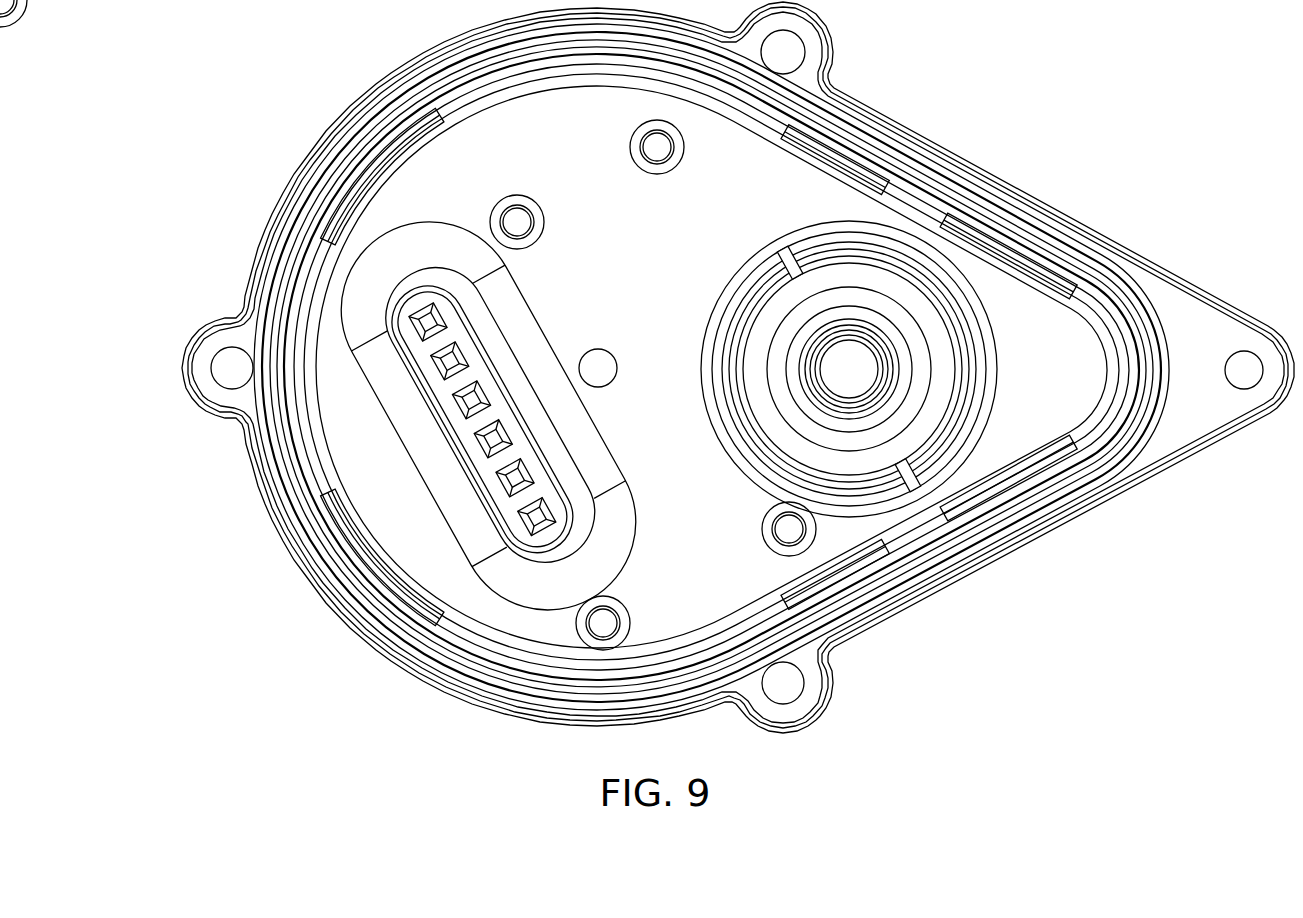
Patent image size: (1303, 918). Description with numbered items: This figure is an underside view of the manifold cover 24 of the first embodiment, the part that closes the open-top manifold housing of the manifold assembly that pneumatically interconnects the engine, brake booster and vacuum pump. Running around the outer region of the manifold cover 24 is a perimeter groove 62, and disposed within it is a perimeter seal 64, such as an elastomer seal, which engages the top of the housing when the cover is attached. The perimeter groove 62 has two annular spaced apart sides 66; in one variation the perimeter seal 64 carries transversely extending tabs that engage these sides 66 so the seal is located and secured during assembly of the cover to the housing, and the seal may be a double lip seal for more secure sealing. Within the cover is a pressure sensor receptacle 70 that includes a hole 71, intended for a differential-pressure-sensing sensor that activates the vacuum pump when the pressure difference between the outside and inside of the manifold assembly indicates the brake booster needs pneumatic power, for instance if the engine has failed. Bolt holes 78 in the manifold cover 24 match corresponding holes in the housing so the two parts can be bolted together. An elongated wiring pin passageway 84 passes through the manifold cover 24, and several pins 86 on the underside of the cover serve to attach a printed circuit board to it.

The manifold cover 24 is at (738, 367).
The perimeter groove 62 is at (295, 446).
The perimeter seal 64 is at (304, 478).
The sides of the perimeter groove 66 is at (933, 558).
The pressure sensor receptacle 70 is at (756, 328).
The hole 71 is at (872, 370).
The bolt holes 78 is at (792, 46).
The wiring pin passageway 84 is at (446, 358).
The pins 86 is at (652, 149).